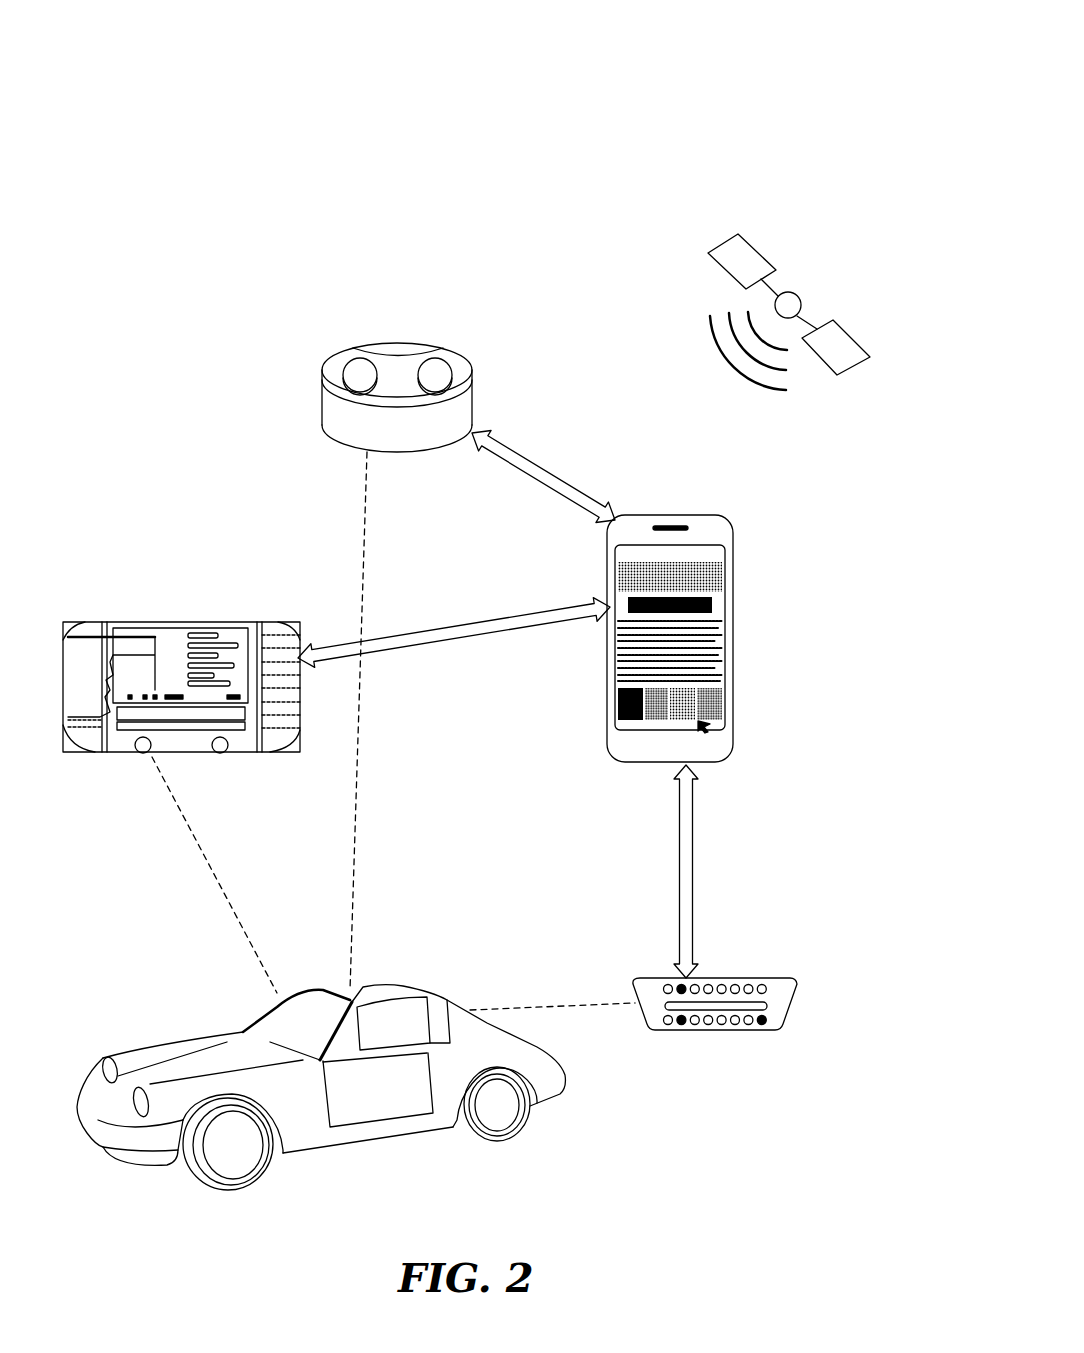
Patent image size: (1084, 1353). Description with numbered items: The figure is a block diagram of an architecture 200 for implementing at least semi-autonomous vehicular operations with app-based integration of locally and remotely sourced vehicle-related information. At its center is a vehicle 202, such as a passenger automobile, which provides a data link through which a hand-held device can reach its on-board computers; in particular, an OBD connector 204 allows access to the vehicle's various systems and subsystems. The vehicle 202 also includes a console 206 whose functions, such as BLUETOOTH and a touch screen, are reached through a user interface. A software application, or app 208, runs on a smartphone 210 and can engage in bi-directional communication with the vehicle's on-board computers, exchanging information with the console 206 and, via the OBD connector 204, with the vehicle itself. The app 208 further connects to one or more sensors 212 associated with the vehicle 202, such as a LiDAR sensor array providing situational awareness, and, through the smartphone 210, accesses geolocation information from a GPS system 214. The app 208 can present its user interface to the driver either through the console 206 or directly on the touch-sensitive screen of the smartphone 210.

The architecture 200 is at (798, 111).
The vehicle 202 is at (405, 987).
The OBD connector 204 is at (378, 342).
The console 206 is at (178, 622).
The software application (app) 208 is at (706, 728).
The smartphone 210 is at (733, 555).
The sensors 212 is at (770, 978).
The GPS system 214 is at (757, 250).